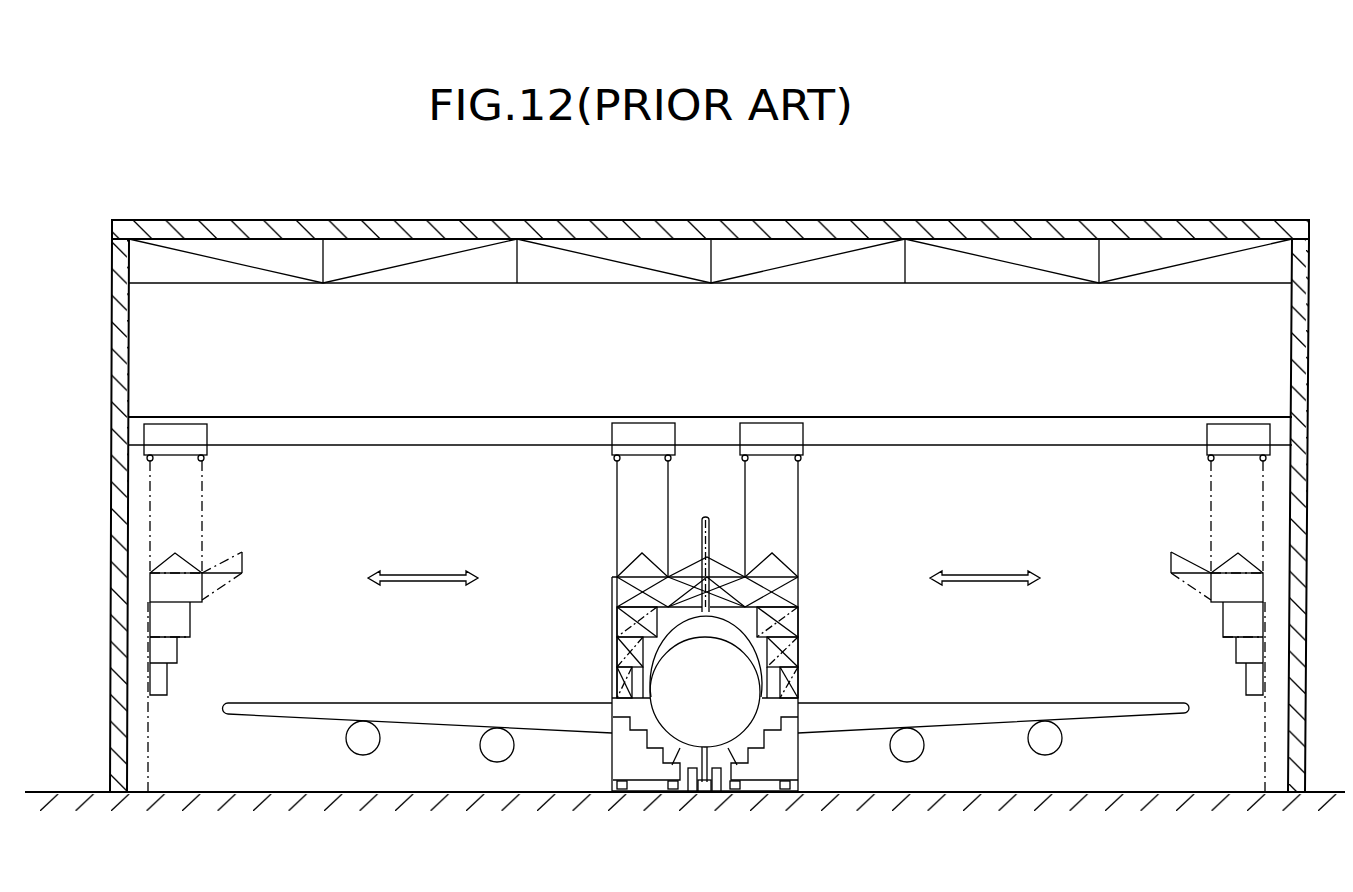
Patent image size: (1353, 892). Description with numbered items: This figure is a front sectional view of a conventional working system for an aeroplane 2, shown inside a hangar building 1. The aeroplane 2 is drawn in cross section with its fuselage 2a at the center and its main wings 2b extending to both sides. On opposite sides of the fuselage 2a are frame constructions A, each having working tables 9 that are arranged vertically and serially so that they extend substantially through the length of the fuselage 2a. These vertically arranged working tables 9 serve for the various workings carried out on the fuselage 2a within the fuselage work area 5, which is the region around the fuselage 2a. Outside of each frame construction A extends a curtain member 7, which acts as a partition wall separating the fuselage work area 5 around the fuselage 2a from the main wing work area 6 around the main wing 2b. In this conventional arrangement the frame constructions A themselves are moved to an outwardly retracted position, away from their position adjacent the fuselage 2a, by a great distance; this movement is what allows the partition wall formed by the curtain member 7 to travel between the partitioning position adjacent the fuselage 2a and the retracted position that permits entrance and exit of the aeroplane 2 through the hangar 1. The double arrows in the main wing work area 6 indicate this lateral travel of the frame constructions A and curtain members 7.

The hangar 1 is at (1110, 220).
The aeroplane 2 is at (706, 649).
The fuselage 2a is at (657, 727).
The main wing 2b is at (470, 703).
The fuselage work area 5 is at (690, 606).
The main wing work area 6 is at (703, 603).
The curtain member 7 is at (612, 690).
The working tables 9 is at (614, 614).
The frame constructions A is at (635, 574).